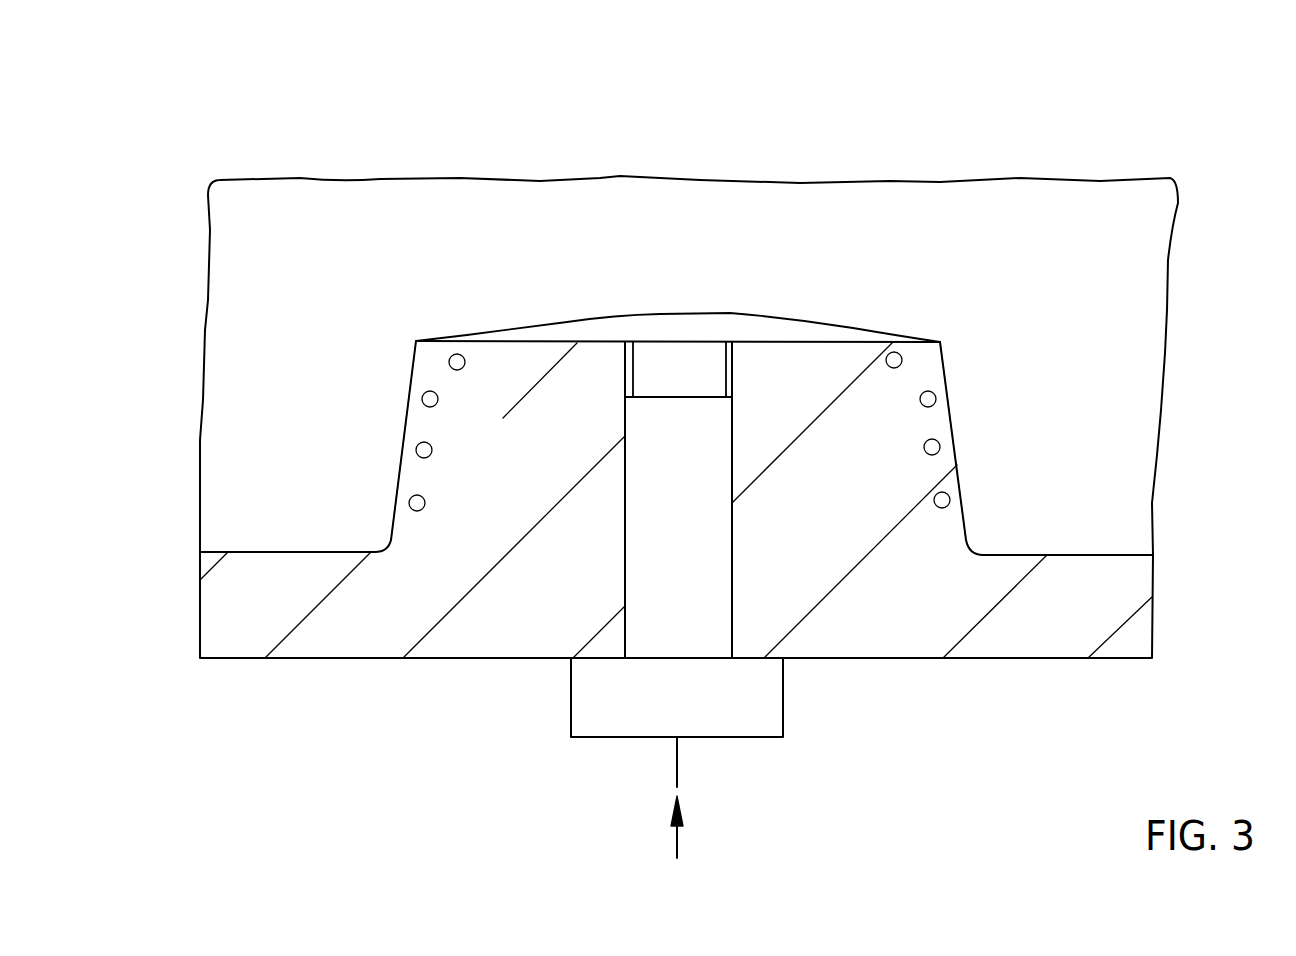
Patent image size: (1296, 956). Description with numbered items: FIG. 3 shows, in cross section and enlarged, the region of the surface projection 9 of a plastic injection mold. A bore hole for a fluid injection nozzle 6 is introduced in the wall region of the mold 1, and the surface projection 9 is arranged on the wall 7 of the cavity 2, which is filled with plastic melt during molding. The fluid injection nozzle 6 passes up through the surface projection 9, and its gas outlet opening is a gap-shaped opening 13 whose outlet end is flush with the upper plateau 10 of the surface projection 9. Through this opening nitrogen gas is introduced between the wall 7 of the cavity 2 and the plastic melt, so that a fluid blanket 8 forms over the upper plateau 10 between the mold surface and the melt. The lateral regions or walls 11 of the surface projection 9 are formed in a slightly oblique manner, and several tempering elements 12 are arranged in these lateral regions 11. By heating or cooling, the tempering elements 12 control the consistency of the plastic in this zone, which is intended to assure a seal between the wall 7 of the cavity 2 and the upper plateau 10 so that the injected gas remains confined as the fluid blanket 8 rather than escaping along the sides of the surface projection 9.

The mold 1 is at (1065, 597).
The cavity 2 is at (420, 210).
The fluid injection nozzle 6 is at (702, 480).
The wall 7 is at (1008, 555).
The fluid blanket 8 is at (690, 327).
The surface projection 9 is at (552, 433).
The upper plateau 10 is at (594, 342).
The lateral regions or walls 11 is at (402, 437).
The tempering elements 12 is at (462, 368).
The gap-shaped opening 13 is at (630, 341).